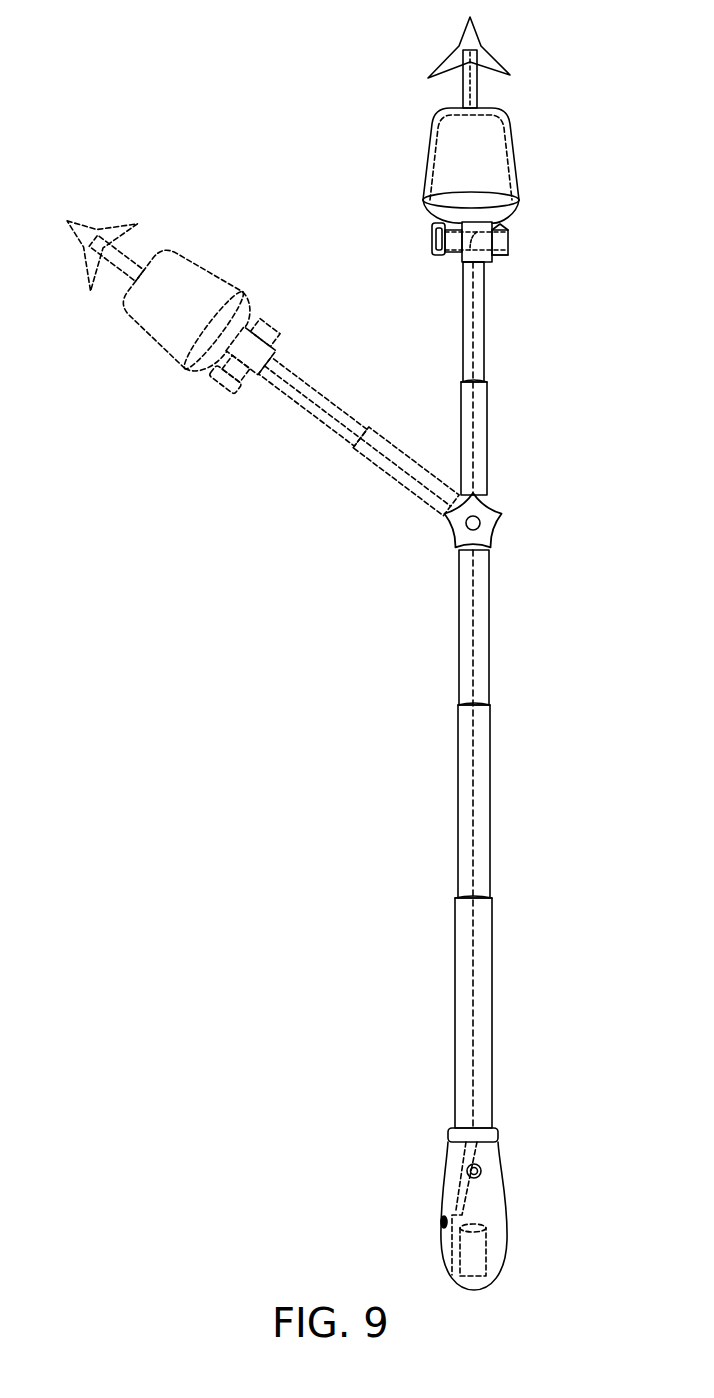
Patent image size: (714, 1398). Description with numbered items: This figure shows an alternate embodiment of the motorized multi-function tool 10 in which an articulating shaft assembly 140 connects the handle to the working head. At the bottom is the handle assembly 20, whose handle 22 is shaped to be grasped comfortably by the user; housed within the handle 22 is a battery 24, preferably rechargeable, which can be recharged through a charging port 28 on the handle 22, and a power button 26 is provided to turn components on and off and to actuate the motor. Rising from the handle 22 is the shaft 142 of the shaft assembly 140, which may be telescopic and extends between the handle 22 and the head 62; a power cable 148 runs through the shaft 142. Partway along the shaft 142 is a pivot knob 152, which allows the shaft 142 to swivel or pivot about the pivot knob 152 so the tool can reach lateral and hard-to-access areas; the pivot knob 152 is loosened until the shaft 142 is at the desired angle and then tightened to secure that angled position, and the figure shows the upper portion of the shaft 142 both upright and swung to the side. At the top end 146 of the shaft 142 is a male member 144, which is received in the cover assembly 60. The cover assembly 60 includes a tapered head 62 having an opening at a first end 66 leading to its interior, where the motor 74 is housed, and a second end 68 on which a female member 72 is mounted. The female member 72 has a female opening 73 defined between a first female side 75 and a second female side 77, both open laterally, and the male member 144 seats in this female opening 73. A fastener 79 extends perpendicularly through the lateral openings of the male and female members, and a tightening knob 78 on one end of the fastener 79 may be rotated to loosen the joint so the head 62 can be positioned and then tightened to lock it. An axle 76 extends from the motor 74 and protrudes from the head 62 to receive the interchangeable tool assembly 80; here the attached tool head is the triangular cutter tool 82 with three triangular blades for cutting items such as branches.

The motorized multi-function tool 10 is at (338, 100).
The handle assembly 20 is at (508, 1187).
The handle 22 is at (490, 1178).
The battery 24 is at (478, 1262).
The power button 26 is at (468, 1168).
The charging port 28 is at (444, 1222).
The cover assembly 60 is at (417, 187).
The head 62 is at (430, 143).
The first end 66 is at (490, 108).
The second end 68 is at (452, 253).
The female member 72 is at (505, 245).
The female opening 73 is at (430, 215).
The motor 74 is at (478, 158).
The first female side 75 is at (455, 268).
The axle 76 is at (465, 97).
The second female side 77 is at (497, 258).
The tightening knob 78 is at (432, 243).
The fastener 79 is at (503, 237).
The interchangeable tool assembly 80 is at (455, 42).
The triangular cutter tool 82 is at (488, 52).
The shaft assembly 140 is at (492, 930).
The shaft 142 is at (462, 634).
The male member 144 is at (488, 262).
The top end 146 is at (460, 282).
The power cable 148 is at (475, 1040).
The pivot knob 152 is at (500, 512).